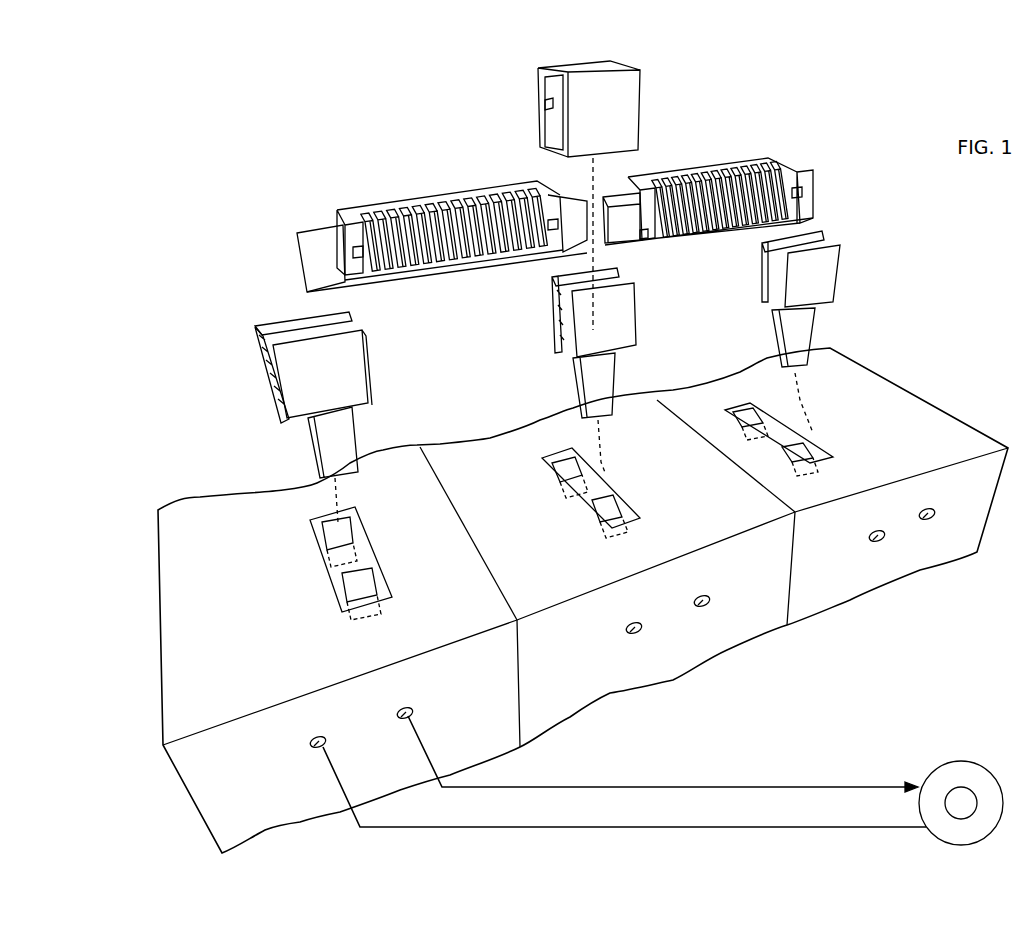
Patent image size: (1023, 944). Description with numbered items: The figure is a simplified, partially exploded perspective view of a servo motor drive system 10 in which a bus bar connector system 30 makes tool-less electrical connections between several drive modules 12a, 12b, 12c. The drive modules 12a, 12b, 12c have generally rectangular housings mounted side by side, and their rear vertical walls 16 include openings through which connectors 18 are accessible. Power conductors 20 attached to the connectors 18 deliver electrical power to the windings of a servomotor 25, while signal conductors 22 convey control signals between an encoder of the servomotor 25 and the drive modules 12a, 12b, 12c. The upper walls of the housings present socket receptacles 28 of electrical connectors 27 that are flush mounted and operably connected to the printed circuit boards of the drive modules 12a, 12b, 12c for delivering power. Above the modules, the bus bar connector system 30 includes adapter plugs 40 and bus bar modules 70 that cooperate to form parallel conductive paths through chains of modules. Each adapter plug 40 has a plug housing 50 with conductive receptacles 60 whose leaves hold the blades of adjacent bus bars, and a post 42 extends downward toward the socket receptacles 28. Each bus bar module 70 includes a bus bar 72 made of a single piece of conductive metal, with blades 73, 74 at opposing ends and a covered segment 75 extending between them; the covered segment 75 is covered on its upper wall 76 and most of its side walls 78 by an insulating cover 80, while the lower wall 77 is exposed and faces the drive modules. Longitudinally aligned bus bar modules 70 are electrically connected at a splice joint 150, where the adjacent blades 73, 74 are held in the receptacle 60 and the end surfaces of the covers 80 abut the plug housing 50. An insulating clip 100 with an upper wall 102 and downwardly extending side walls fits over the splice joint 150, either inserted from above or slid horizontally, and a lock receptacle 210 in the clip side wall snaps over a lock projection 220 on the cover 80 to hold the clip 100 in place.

The servo motor drive system 10 is at (936, 244).
The drive module 12a is at (208, 512).
The drive module 12b is at (490, 462).
The drive module 12c is at (725, 400).
The rear vertical wall 16 is at (479, 671).
The connector 18 is at (311, 745).
The power conductor 20 is at (760, 787).
The signal conductor 22 is at (760, 827).
The servomotor 25 is at (985, 782).
The electrical connector 27 is at (325, 557).
The socket receptacle 28 is at (352, 520).
The bus bar connector system 30 is at (848, 225).
The adapter plug 40 is at (252, 391).
The post 42 is at (318, 460).
The plug housing 50 is at (361, 382).
The conductive receptacle 60 is at (262, 358).
The bus bar module 70 is at (518, 218).
The bus bar 72 is at (300, 229).
The blade 73 is at (332, 246).
The blade 74 is at (580, 252).
The covered segment 75 is at (498, 262).
The upper wall 76 is at (340, 212).
The lower wall 77 is at (393, 278).
The side wall 78 is at (443, 268).
The cover 80 is at (414, 205).
The clip 100 is at (588, 100).
The upper wall 102 is at (585, 66).
The splice joint 150 is at (596, 192).
The lock receptacle 210 is at (546, 108).
The lock projection 220 is at (357, 257).